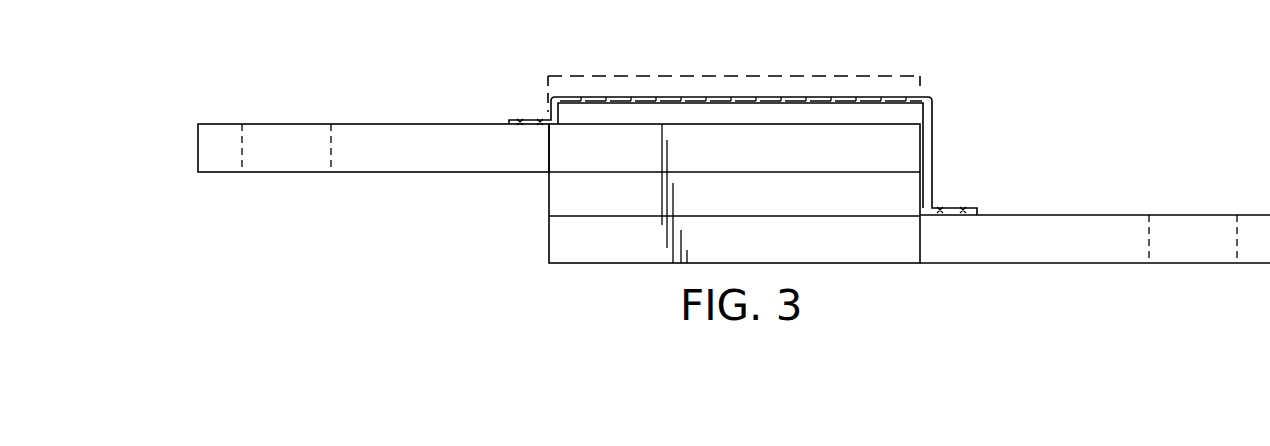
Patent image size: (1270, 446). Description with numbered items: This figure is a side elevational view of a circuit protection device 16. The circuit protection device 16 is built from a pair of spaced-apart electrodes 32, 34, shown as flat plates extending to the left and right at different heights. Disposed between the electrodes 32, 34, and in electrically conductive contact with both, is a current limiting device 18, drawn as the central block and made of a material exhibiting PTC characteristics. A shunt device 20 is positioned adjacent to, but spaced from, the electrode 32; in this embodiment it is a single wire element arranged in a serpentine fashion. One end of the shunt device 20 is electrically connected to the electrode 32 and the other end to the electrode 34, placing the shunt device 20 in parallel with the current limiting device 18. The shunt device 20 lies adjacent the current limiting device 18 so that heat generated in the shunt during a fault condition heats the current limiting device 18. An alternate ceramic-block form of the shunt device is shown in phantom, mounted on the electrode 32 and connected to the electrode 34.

The circuit protection device 16 is at (1008, 95).
The current limiting device 18 is at (548, 200).
The shunt device 20 is at (902, 97).
The electrode 32 is at (370, 124).
The electrode 34 is at (1115, 215).